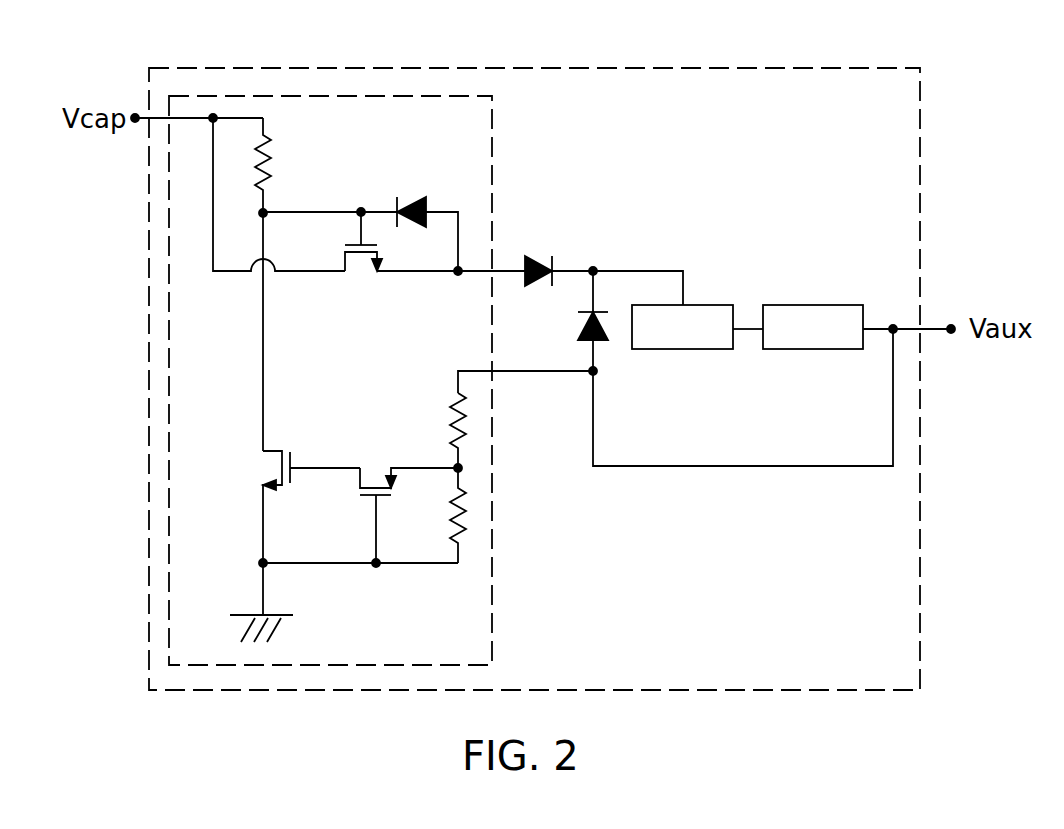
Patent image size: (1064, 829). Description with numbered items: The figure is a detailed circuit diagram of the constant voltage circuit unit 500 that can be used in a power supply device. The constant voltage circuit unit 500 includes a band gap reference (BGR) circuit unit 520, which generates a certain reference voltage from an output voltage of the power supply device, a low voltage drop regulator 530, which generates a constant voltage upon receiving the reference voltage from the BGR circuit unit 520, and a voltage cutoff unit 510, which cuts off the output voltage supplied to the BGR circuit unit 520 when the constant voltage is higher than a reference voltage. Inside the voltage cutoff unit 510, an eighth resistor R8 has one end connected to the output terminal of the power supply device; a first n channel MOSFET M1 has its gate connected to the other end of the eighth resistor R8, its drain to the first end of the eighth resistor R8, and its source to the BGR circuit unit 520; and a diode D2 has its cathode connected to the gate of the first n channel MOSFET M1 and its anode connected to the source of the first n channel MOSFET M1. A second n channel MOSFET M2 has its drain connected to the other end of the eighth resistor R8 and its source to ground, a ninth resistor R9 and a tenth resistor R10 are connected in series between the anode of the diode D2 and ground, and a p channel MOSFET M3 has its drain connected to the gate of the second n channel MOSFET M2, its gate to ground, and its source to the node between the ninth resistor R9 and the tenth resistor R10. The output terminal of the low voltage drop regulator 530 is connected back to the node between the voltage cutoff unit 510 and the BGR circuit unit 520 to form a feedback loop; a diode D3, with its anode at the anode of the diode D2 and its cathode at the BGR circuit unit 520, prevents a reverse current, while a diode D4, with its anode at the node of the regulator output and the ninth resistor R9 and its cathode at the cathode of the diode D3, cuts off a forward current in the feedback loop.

The constant voltage circuit unit 500 is at (823, 68).
The voltage cutoff unit 510 is at (491, 128).
The band gap reference (BGR) circuit unit 520 is at (708, 305).
The low voltage drop regulator 530 is at (808, 305).
The eighth resistor R8 is at (284, 165).
The ninth resistor R9 is at (439, 430).
The tenth resistor R10 is at (429, 515).
The diode D2 is at (413, 196).
The diode D3 is at (535, 254).
The diode D4 is at (572, 321).
The first n channel MOSFET M1 is at (362, 266).
The second n channel MOSFET M2 is at (262, 469).
The p channel MOSFET M3 is at (378, 472).